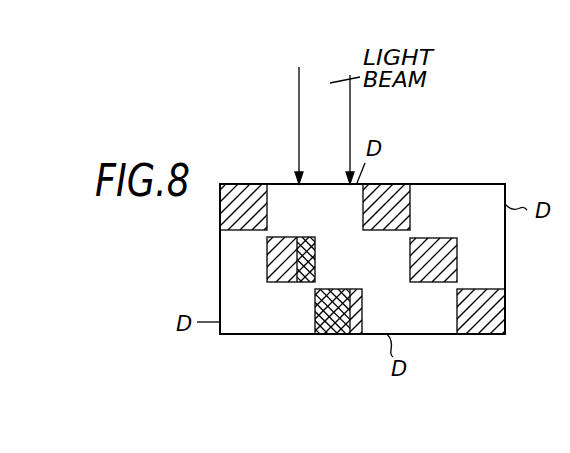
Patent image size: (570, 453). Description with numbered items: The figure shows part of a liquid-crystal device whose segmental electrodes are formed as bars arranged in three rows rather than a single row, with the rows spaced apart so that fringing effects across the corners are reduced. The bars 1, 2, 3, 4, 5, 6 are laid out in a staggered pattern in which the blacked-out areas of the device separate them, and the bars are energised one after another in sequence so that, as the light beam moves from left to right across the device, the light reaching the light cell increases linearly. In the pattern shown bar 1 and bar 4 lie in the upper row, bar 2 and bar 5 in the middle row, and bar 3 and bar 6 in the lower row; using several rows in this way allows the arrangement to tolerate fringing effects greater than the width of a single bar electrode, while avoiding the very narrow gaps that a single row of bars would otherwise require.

The bar electrode 1 is at (250, 184).
The bar electrode 2 is at (286, 282).
The bar electrode 3 is at (355, 334).
The bar electrode 4 is at (389, 184).
The bar electrode 5 is at (437, 282).
The bar electrode 6 is at (482, 334).